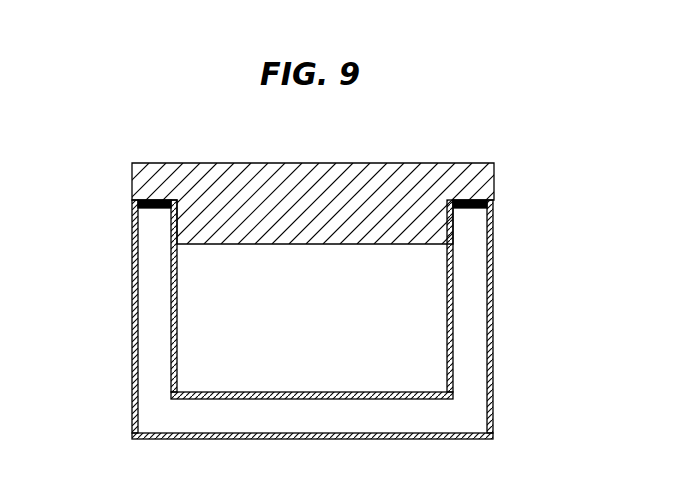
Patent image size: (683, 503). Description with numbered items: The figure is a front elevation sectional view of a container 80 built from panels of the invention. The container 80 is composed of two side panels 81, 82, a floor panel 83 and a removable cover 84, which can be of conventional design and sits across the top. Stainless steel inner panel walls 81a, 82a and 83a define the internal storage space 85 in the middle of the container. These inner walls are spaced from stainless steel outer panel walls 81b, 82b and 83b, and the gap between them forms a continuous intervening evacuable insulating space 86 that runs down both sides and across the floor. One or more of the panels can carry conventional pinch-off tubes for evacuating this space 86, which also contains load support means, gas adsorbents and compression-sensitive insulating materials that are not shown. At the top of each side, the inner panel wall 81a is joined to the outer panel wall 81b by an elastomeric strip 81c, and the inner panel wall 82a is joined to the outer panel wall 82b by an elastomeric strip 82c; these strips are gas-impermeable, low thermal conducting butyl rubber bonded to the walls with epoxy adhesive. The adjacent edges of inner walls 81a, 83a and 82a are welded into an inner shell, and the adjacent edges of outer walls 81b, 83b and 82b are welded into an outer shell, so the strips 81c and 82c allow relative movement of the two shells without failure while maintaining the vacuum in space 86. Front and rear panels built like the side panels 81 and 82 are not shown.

The container 80 is at (208, 162).
The removable cover 84 is at (312, 170).
The internal storage space 85 is at (318, 318).
The evacuable insulating space 86 is at (217, 413).
The side panel 81 is at (132, 284).
The inner panel wall 81a is at (172, 328).
The outer panel wall 81b is at (132, 370).
The elastomeric strip 81c is at (160, 207).
The side panel 82 is at (493, 289).
The inner panel wall 82a is at (453, 351).
The outer panel wall 82b is at (493, 400).
The elastomeric strip 82c is at (467, 207).
The floor panel 83 is at (271, 440).
The inner panel wall 83a is at (352, 400).
The outer panel wall 83b is at (407, 440).